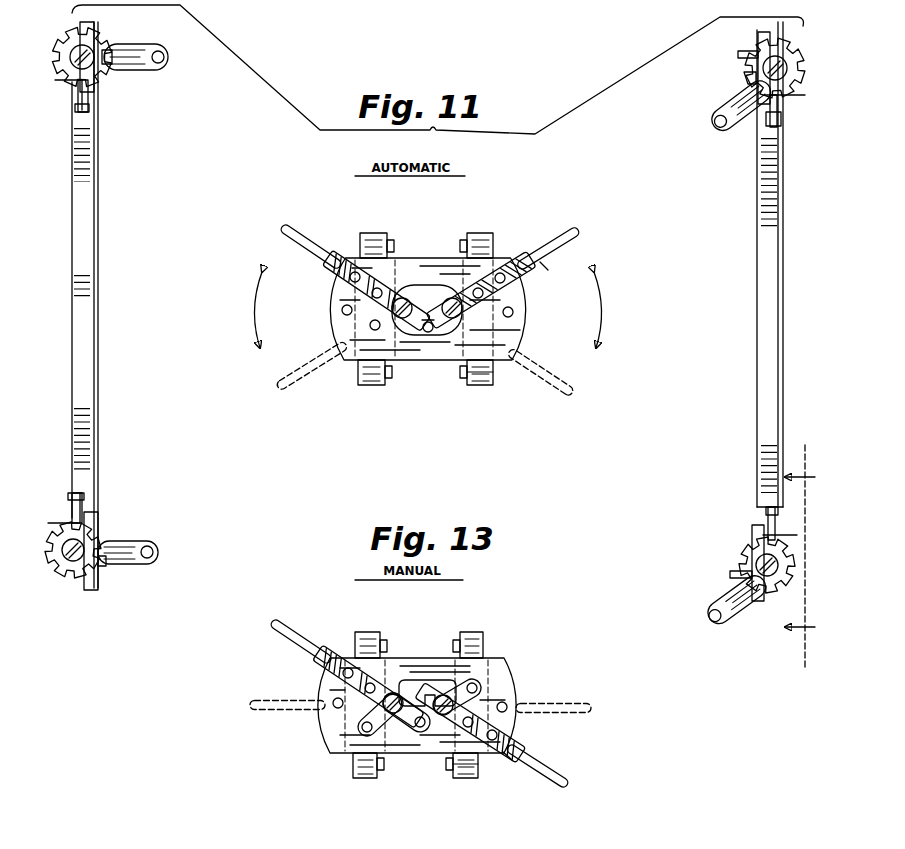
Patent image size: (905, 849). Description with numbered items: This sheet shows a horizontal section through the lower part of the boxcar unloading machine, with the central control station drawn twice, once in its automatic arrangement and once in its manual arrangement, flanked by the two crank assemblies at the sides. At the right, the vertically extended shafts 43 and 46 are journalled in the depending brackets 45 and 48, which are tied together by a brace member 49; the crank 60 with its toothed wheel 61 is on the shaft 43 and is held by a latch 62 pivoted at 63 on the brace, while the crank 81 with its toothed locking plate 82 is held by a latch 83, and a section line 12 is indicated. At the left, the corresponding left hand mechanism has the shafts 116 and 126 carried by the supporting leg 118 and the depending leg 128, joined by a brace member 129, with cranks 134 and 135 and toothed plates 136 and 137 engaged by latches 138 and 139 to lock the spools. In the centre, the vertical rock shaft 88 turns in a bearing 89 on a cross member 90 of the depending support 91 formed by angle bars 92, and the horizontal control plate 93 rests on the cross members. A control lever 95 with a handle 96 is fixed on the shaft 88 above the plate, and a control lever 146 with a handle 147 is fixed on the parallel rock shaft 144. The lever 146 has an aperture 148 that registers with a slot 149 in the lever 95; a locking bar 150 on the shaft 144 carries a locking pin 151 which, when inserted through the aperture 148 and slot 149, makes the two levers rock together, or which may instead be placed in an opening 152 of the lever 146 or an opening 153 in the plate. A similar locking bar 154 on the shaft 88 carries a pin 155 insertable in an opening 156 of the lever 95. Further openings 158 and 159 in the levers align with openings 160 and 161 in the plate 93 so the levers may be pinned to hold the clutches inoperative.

In FIG. 11, the cable 12 is at (787, 544).
In FIG. 11, the vertically extended shaft 43 is at (784, 68).
In FIG. 11, the depending bracket 45 is at (741, 55).
In FIG. 11, the vertically extended shaft 46 is at (767, 575).
In FIG. 11, the depending bracket 48 is at (735, 573).
In FIG. 11, the brace member 49 is at (765, 372).
In FIG. 11, the manually operated crank 60 is at (726, 106).
In FIG. 11, the toothed wheel 61 is at (746, 78).
In FIG. 11, the latch 62 is at (782, 106).
In FIG. 11, the pivot of latch 63 is at (764, 121).
In FIG. 11, the crank 81 is at (727, 597).
In FIG. 11, the toothed locking plate 82 is at (790, 582).
In FIG. 11, the latch 83 is at (768, 523).
In FIG. 11, the vertical rock shaft 88 is at (438, 306).
In FIG. 13, the vertical rock shaft 88 is at (461, 678).
In FIG. 11, the bearing 89 is at (437, 338).
In FIG. 11, the cross member 90 is at (492, 376).
In FIG. 13, the cross member 90 is at (474, 640).
In FIG. 11, the depending support 91 is at (469, 384).
In FIG. 13, the depending support 91 is at (455, 781).
In FIG. 11, the depending angle bars 92 is at (392, 241).
In FIG. 13, the depending angle bars 92 is at (385, 648).
In FIG. 11, the control plate 93 is at (370, 362).
In FIG. 13, the control plate 93 is at (366, 705).
In FIG. 11, the control lever 95 is at (506, 279).
In FIG. 13, the control lever 95 is at (504, 757).
In FIG. 11, the handle 96 is at (575, 238).
In FIG. 13, the handle 96 is at (593, 708).
In FIG. 11, the vertically extended shaft 116 is at (90, 53).
In FIG. 11, the supporting leg 118 is at (112, 51).
In FIG. 11, the vertically extended shaft 126 is at (74, 562).
In FIG. 11, the depending leg 128 is at (105, 563).
In FIG. 11, the brace member 129 is at (82, 383).
In FIG. 11, the crank 134 is at (136, 64).
In FIG. 11, the crank 135 is at (138, 544).
In FIG. 11, the toothed plate 136 is at (72, 44).
In FIG. 11, the toothed plate 137 is at (56, 568).
In FIG. 11, the latch 138 is at (80, 96).
In FIG. 11, the latch 139 is at (74, 511).
In FIG. 11, the rock shaft 144 is at (369, 326).
In FIG. 13, the rock shaft 144 is at (361, 731).
In FIG. 11, the control lever 146 is at (350, 258).
In FIG. 13, the control lever 146 is at (340, 655).
In FIG. 11, the handle 147 is at (292, 237).
In FIG. 13, the handle 147 is at (291, 631).
In FIG. 13, the aperture 148 is at (418, 728).
In FIG. 11, the slot 149 is at (436, 284).
In FIG. 13, the slot 149 is at (423, 680).
In FIG. 11, the locking bar 150 is at (414, 295).
In FIG. 13, the locking bar 150 is at (391, 713).
In FIG. 11, the locking pin 151 is at (427, 336).
In FIG. 13, the locking pin 151 is at (370, 736).
In FIG. 11, the opening 152 is at (371, 293).
In FIG. 13, the opening 152 is at (374, 683).
In FIG. 11, the opening 153 is at (364, 334).
In FIG. 11, the locking bar 154 is at (503, 260).
In FIG. 13, the locking bar 154 is at (472, 684).
In FIG. 11, the locking pin 155 is at (484, 294).
In FIG. 13, the locking pin 155 is at (480, 690).
In FIG. 13, the opening 156 is at (476, 723).
In FIG. 11, the opening 158 is at (538, 262).
In FIG. 13, the opening 158 is at (488, 762).
In FIG. 11, the opening 159 is at (349, 278).
In FIG. 13, the opening 159 is at (342, 672).
In FIG. 11, the opening 160 is at (514, 312).
In FIG. 13, the opening 160 is at (508, 707).
In FIG. 11, the opening 161 is at (341, 310).
In FIG. 13, the opening 161 is at (335, 709).